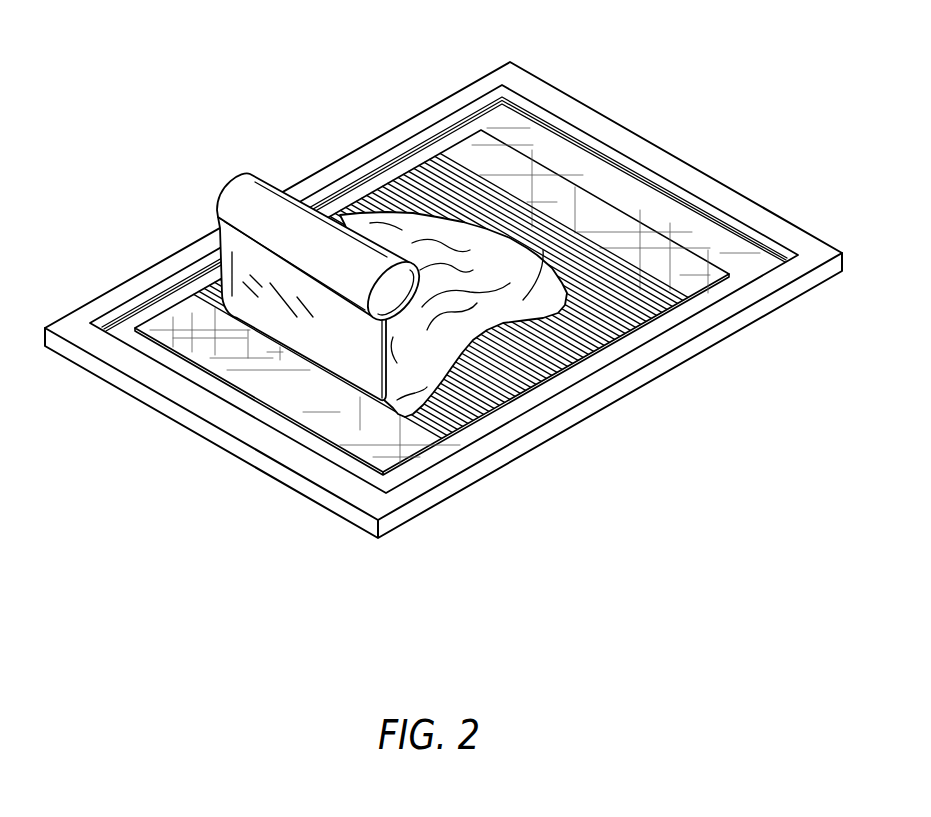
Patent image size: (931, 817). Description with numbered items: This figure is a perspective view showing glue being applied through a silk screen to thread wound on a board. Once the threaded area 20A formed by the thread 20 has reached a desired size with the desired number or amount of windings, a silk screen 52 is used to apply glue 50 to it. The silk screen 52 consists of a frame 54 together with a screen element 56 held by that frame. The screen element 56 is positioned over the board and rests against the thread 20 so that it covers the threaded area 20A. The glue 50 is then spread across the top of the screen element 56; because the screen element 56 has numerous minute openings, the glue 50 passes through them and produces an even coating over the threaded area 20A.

The silk screen 52 is at (510, 62).
The frame 54 is at (705, 182).
The screen element 56 is at (715, 237).
The thread 20 is at (423, 430).
The threaded area 20A is at (558, 215).
The glue 50 is at (366, 186).